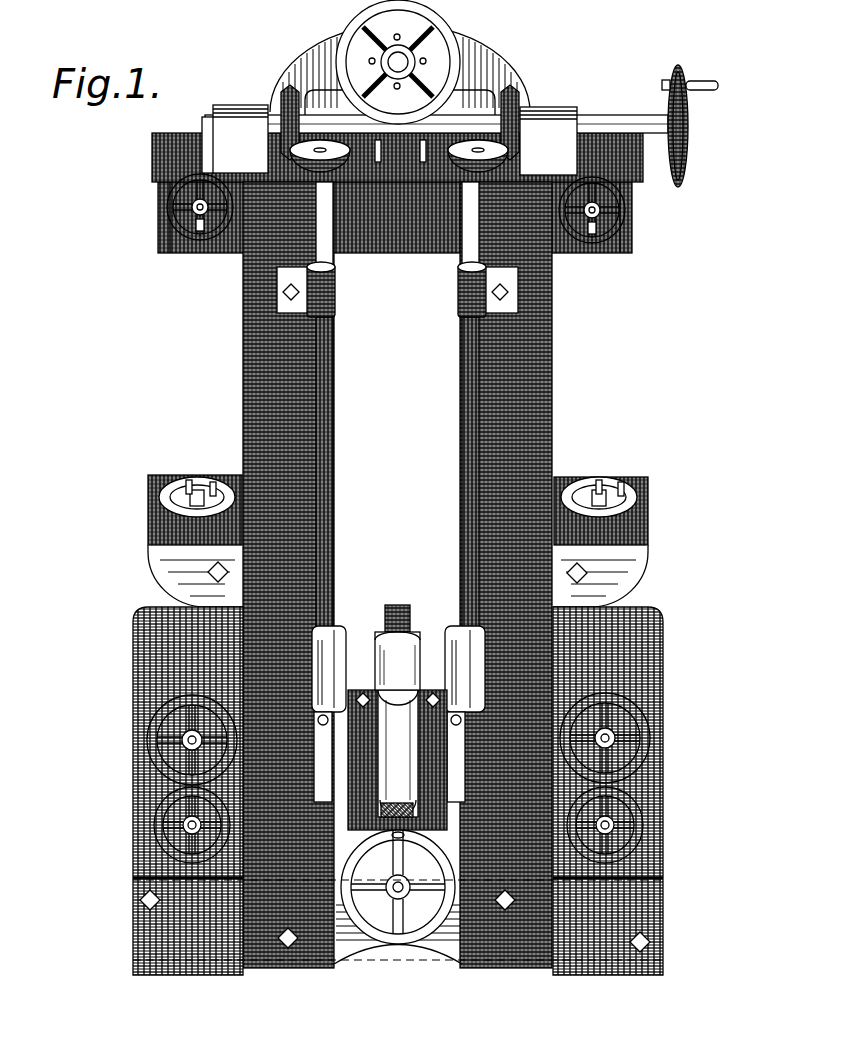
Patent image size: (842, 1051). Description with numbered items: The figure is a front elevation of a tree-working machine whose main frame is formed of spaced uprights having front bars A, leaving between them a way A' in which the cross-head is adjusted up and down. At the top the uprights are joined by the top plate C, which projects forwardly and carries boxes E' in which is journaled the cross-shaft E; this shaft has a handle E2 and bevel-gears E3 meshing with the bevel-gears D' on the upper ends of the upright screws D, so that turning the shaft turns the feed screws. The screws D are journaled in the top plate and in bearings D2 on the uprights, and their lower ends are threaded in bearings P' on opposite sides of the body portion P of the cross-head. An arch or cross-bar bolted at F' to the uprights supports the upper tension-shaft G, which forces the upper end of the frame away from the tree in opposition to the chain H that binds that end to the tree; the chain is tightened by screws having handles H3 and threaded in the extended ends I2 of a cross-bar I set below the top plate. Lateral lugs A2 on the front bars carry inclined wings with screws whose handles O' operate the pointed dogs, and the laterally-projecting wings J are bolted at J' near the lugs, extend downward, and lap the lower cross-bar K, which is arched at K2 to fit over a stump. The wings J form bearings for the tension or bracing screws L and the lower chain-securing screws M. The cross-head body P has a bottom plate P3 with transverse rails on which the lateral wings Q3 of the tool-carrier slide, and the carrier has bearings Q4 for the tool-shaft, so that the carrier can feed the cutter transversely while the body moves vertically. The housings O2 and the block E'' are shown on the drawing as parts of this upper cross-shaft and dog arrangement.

The bolting point of arch F' is at (360, 69).
The bevel-gears E3 is at (280, 100).
The boxes E' is at (560, 111).
The bearing block E'' is at (235, 139).
The cross-shaft E is at (436, 103).
The handle E2 is at (688, 95).
The top plate C is at (165, 152).
The upper tension-shaft G is at (406, 62).
The chain H is at (165, 207).
The handles H3 is at (199, 234).
The extended ends of cross-bar I2 is at (160, 240).
The bevel-gears D' is at (399, 180).
The bearings D2 is at (336, 295).
The cross bar I is at (423, 240).
The upright screws D is at (397, 411).
The front bars A is at (386, 575).
The way A' is at (393, 392).
The bearing cap O2 is at (155, 478).
The handles O' is at (405, 463).
The lateral lugs A2 is at (183, 560).
The bolts J' is at (397, 590).
The bearings Q4 is at (407, 648).
The bearings P' is at (382, 669).
The body portion P is at (386, 757).
The lower chain-securing screws M is at (147, 742).
The laterally-projecting wings J is at (389, 791).
The tension or bracing screws L is at (170, 835).
The bottom plate P3 is at (430, 815).
The lateral wings Q3 is at (363, 814).
The arch K2 is at (383, 952).
The lower cross-bar K is at (451, 950).